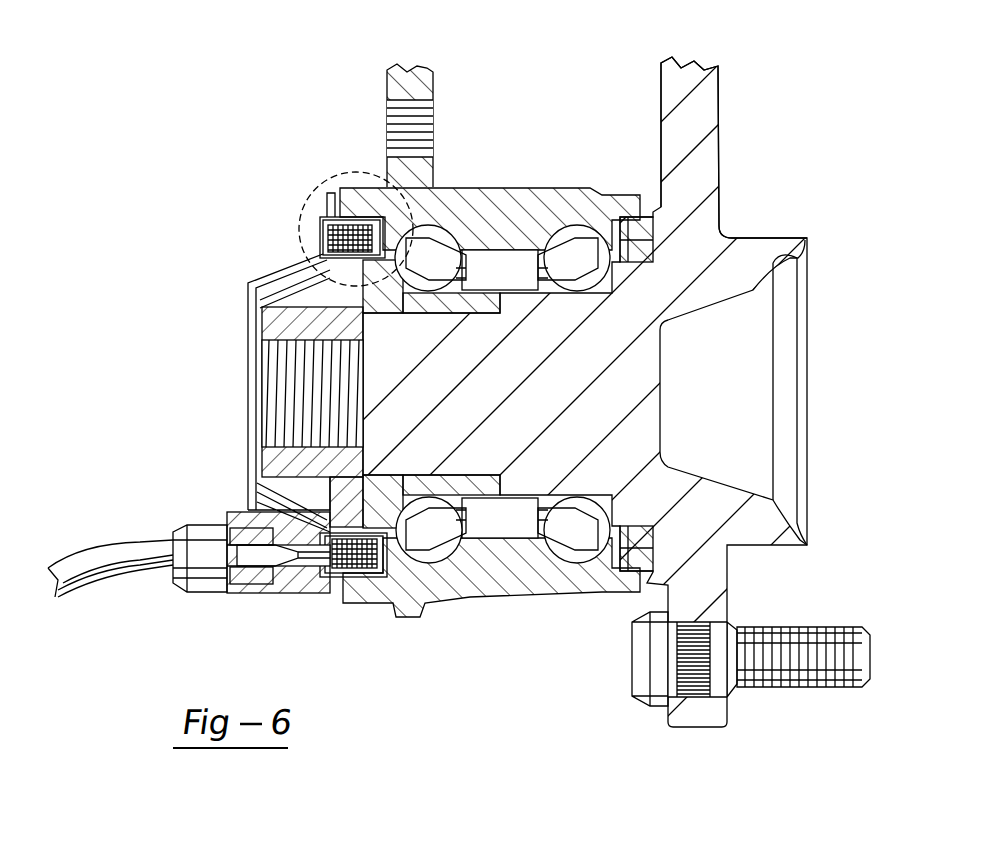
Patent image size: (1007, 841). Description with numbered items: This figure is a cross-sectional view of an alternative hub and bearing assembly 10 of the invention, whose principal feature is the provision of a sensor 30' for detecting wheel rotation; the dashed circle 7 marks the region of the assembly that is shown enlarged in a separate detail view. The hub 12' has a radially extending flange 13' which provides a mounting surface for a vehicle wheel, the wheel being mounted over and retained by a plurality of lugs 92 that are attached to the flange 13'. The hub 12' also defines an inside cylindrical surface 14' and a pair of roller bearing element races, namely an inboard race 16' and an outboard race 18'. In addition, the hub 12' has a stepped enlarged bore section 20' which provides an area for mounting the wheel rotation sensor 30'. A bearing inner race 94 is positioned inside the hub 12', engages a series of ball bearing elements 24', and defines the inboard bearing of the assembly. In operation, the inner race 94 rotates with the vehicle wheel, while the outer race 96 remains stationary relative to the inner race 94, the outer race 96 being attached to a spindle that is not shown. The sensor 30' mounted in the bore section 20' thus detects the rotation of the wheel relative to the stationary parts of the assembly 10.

The detail circle of FIG. 7 is at (337, 172).
The hub and bearing assembly 10 is at (503, 420).
The hub 12' is at (585, 392).
The flange 13' is at (709, 122).
The inside cylindrical surface 14' is at (491, 340).
The inboard race 16' is at (433, 318).
The outboard race 18' is at (605, 349).
The stepped enlarged bore section 20' is at (263, 391).
The ball bearing elements 24' is at (419, 290).
The sensor 30' is at (288, 367).
The lugs 92 is at (800, 624).
The bearing inner race 94 is at (396, 300).
The outer race 96 is at (497, 220).